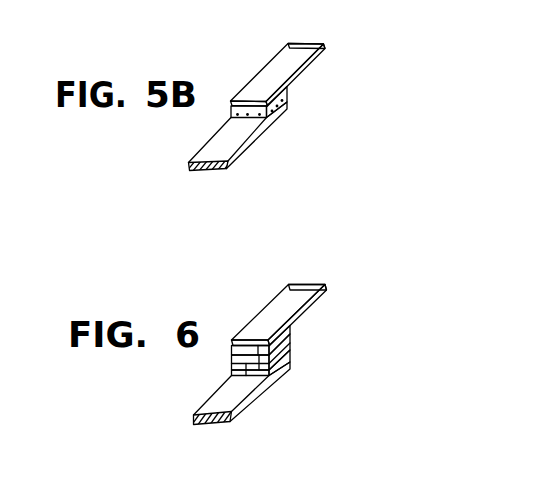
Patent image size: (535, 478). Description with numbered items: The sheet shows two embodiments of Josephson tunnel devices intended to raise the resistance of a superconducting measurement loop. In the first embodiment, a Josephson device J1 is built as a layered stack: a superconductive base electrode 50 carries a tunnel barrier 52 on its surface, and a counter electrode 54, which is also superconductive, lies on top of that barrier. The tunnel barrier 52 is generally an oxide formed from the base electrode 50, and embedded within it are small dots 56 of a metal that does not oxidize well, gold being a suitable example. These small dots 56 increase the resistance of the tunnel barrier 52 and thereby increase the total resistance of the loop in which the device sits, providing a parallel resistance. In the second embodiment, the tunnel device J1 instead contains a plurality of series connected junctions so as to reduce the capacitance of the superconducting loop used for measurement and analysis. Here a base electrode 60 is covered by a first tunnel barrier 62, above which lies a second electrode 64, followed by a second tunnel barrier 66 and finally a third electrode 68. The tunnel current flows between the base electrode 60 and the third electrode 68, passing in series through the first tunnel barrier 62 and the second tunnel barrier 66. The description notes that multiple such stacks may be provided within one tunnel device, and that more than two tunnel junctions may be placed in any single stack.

In FIG. 5B, the superconductive base electrode 50 is at (223, 159).
In FIG. 5B, the tunnel barrier 52 is at (288, 97).
In FIG. 5B, the counter electrode 54 is at (294, 55).
In FIG. 5B, the small dots 56 is at (275, 112).
In FIG. 5B, the Josephson device J1 is at (299, 108).
In FIG. 6, the Josephson device J1 is at (289, 388).
In FIG. 6, the base electrode 60 is at (229, 405).
In FIG. 6, the first tunnel barrier 62 is at (288, 364).
In FIG. 6, the second electrode 64 is at (291, 346).
In FIG. 6, the second tunnel barrier 66 is at (291, 338).
In FIG. 6, the third electrode 68 is at (298, 287).